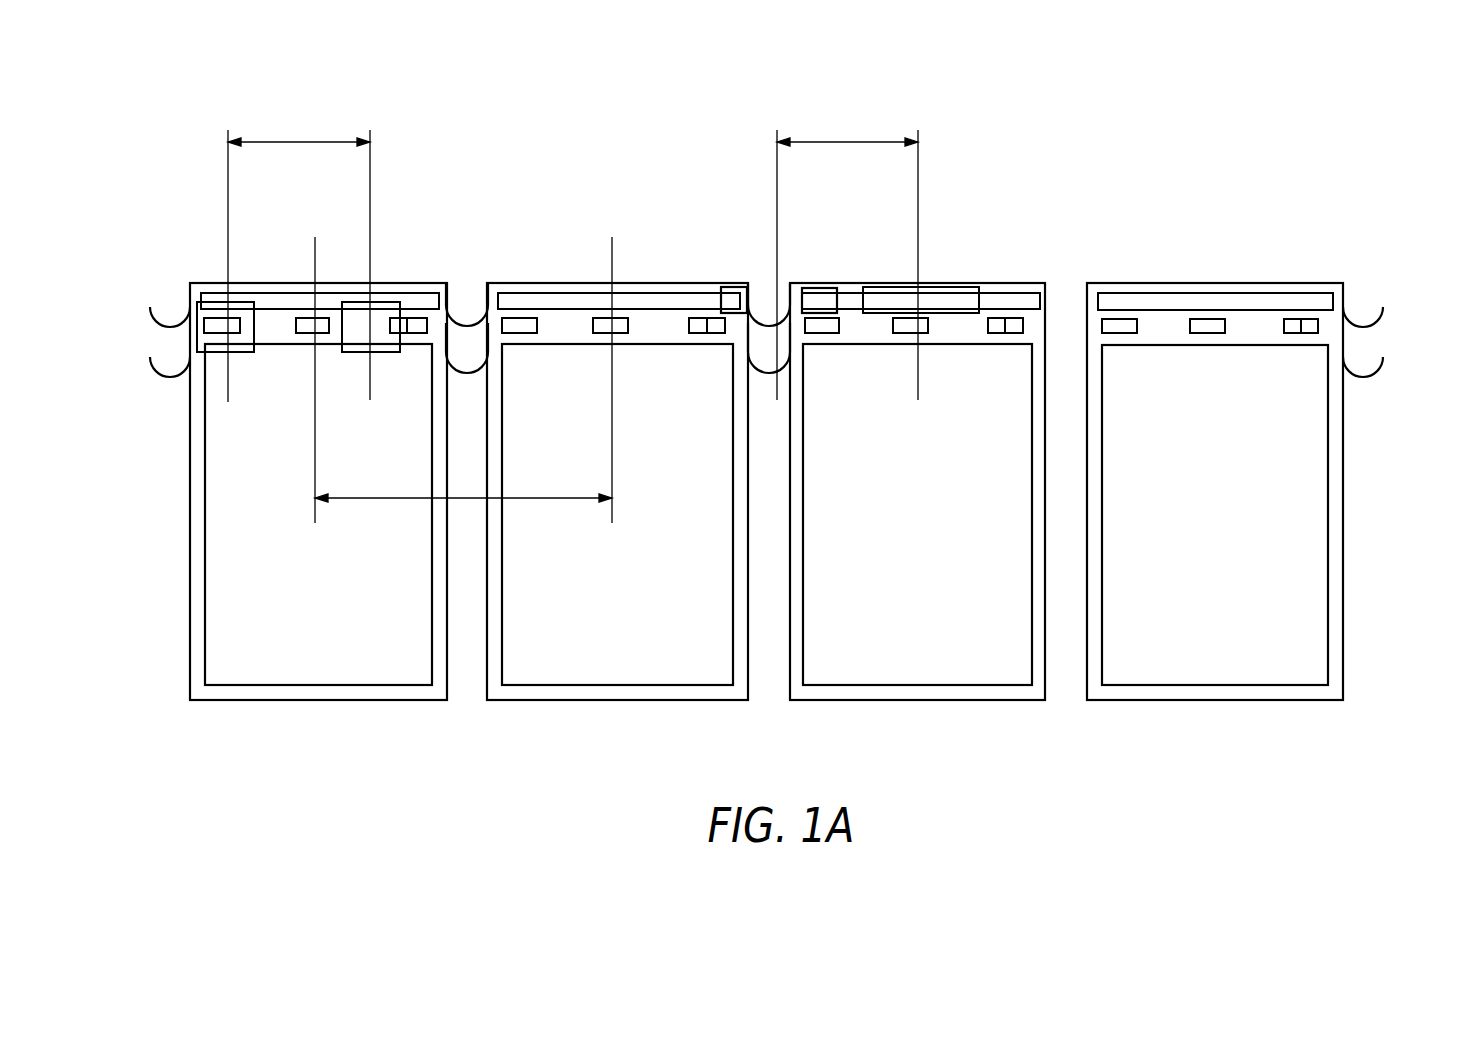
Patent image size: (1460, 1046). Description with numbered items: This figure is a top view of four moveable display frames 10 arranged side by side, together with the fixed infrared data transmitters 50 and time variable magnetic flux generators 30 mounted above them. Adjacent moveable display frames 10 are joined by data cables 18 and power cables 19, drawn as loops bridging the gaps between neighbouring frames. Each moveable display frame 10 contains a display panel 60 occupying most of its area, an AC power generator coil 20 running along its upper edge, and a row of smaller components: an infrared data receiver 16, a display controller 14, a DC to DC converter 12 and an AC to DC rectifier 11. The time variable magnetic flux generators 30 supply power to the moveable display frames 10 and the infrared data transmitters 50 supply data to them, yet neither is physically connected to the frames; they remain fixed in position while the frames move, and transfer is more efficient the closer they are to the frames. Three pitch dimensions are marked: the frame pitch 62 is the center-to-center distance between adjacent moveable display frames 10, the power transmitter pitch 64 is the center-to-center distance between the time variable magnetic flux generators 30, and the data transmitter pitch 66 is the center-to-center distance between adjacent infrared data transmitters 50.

The moveable display frame 10 is at (313, 700).
The AC to DC rectifier 11 is at (417, 335).
The DC to DC converter 12 is at (407, 335).
The display controller 14 is at (305, 335).
The infrared data receiver 16 is at (231, 334).
The data cable 18 is at (150, 315).
The power cable 19 is at (150, 365).
The AC power generator coil 20 is at (1110, 298).
The time variable magnetic flux generator 30 is at (930, 290).
The infrared data transmitter 50 is at (205, 298).
The display panel 60 is at (238, 655).
The frame pitch 62 is at (520, 500).
The power transmitter pitch 64 is at (840, 145).
The data transmitter pitch 66 is at (290, 145).